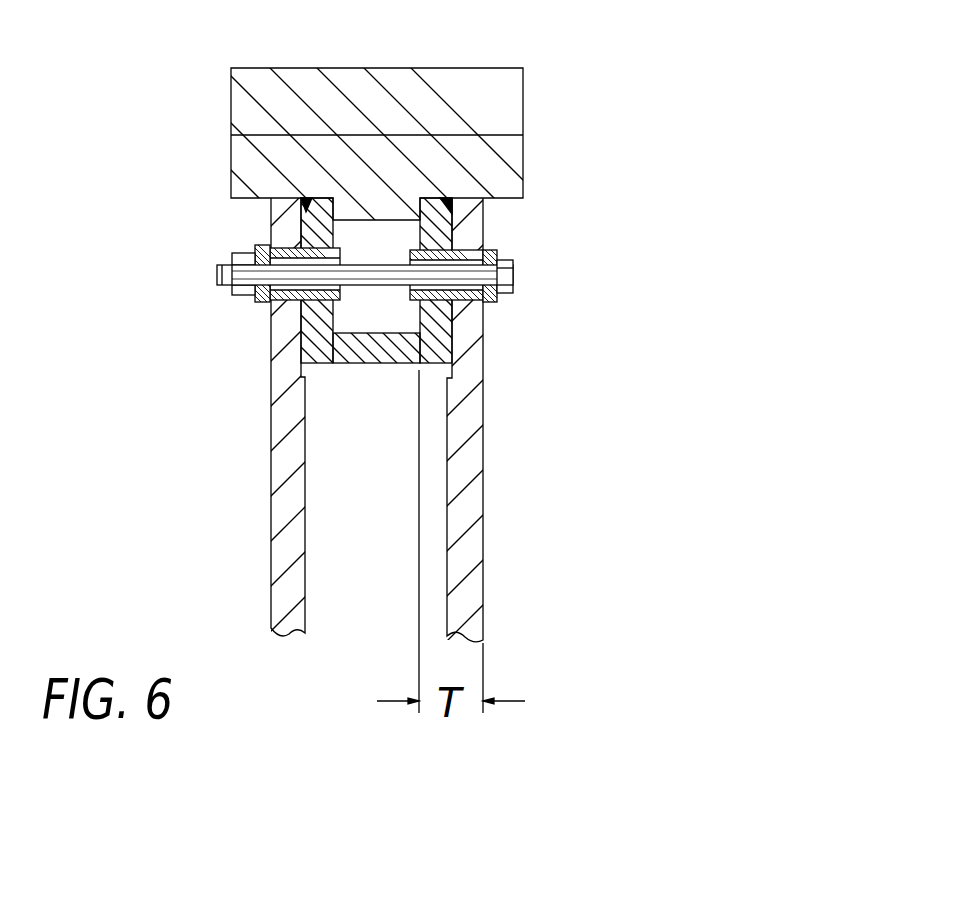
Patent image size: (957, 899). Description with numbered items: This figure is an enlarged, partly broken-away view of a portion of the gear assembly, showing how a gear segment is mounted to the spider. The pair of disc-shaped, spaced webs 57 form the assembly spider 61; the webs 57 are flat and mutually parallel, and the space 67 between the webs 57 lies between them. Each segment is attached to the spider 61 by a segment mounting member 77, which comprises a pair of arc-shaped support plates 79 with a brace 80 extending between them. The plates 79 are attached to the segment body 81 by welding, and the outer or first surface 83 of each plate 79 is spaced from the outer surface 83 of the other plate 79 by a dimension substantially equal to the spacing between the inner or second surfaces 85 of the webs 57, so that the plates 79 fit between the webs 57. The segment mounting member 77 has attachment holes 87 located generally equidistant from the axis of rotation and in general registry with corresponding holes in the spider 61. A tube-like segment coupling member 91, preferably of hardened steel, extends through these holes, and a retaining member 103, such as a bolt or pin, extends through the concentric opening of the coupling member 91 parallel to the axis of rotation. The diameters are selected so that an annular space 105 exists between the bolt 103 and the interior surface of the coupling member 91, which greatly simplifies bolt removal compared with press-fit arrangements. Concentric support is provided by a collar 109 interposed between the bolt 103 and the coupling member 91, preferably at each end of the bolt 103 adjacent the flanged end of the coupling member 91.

The web 57 is at (271, 548).
The assembly spider 61 is at (508, 553).
The space 67 is at (337, 483).
The segment mounting member 77 is at (250, 377).
The support plate 79 is at (306, 343).
The brace 80 is at (380, 367).
The segment body 81 is at (512, 157).
The outer surface 83 is at (482, 221).
The inner surface 85 is at (303, 203).
The attachment hole 87 is at (420, 303).
The segment coupling member 91 is at (483, 316).
The retaining member 103 is at (513, 288).
The annular space 105 is at (333, 356).
The collar 109 is at (253, 302).